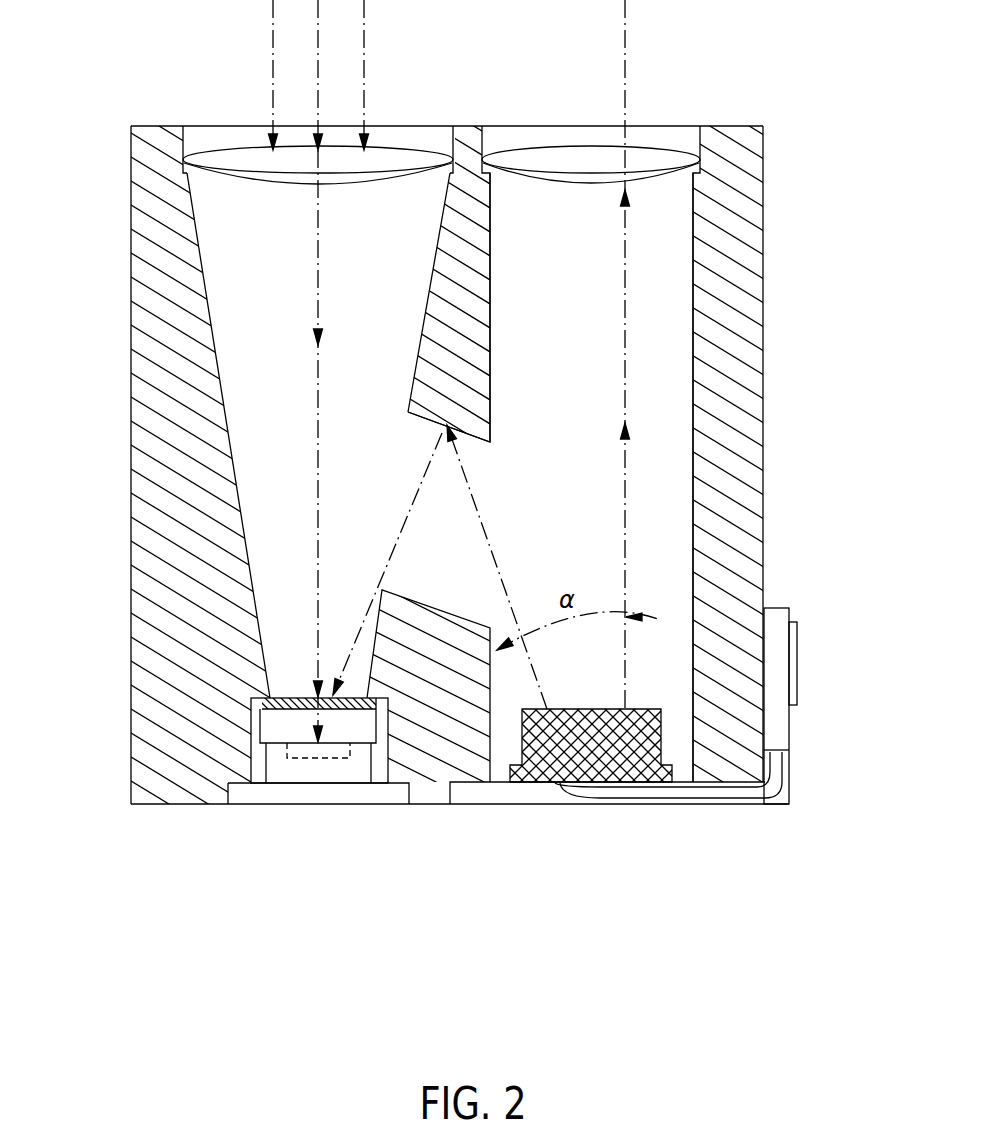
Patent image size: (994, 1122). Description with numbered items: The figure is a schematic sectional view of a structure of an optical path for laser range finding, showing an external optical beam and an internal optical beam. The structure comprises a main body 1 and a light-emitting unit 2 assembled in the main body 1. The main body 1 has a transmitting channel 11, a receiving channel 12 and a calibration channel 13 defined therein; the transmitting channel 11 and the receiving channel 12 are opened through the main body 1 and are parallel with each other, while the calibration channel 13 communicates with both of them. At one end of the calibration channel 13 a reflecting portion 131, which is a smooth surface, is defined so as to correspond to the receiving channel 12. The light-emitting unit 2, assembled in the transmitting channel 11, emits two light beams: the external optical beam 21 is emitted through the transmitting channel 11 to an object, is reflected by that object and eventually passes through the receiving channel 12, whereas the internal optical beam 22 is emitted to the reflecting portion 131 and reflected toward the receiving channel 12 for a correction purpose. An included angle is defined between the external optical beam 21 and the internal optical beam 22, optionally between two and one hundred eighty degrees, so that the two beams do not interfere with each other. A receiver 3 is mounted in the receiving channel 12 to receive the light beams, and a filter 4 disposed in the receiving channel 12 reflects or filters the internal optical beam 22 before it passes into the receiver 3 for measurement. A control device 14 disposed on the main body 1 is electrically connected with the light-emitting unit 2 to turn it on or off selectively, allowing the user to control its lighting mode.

The main body 1 is at (752, 258).
The transmitting channel 11 is at (663, 377).
The receiving channel 12 is at (268, 363).
The calibration channel 13 is at (458, 580).
The reflecting portion 131 is at (418, 418).
The control device 14 is at (772, 675).
The light-emitting unit 2 is at (550, 760).
The external optical beam 21 is at (625, 484).
The internal optical beam 22 is at (498, 570).
The receiver 3 is at (307, 770).
The filter 4 is at (360, 710).